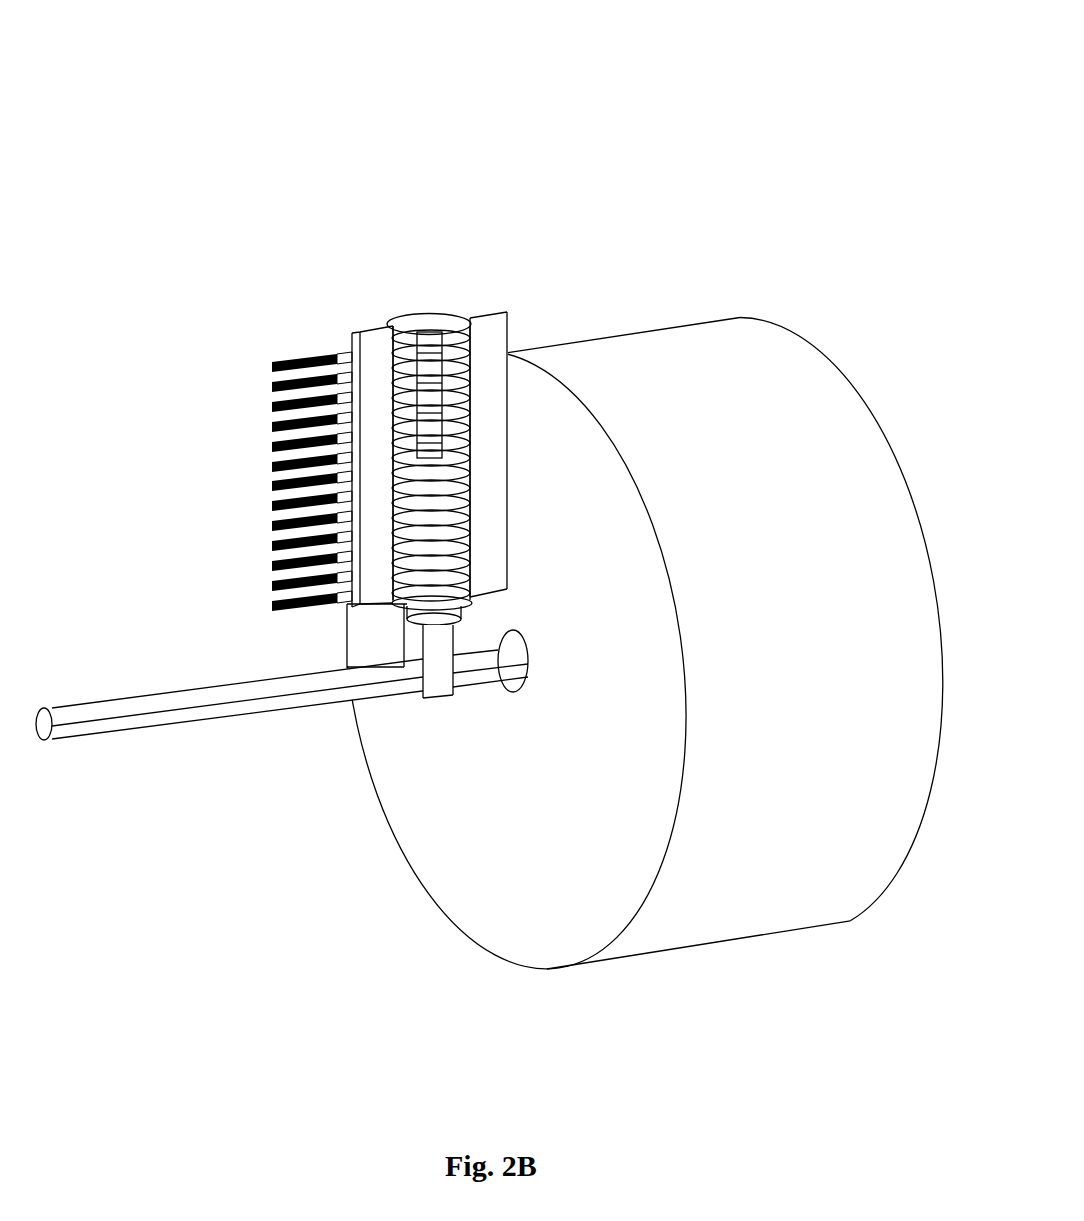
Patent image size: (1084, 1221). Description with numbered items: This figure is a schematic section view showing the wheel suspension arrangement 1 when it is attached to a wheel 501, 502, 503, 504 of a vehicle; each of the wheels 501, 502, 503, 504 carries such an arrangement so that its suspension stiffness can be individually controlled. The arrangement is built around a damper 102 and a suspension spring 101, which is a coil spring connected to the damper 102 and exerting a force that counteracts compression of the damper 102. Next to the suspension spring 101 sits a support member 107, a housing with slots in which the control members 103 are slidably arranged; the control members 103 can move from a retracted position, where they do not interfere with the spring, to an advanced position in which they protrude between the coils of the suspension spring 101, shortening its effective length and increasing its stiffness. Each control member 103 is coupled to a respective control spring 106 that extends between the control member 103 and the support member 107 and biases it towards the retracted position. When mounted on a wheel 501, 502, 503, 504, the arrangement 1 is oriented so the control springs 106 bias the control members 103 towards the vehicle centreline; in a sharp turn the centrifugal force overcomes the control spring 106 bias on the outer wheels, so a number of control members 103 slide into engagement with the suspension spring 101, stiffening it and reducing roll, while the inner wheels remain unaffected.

The wheel suspension arrangement 1 is at (295, 197).
The suspension spring 101 is at (435, 543).
The damper 102 is at (432, 323).
The control members 103 is at (348, 333).
The control springs 106 is at (295, 360).
The support member 107 is at (485, 337).
The wheel 501 is at (624, 505).
The wheel 502 is at (624, 655).
The wheel 503 is at (624, 655).
The wheel 504 is at (605, 357).